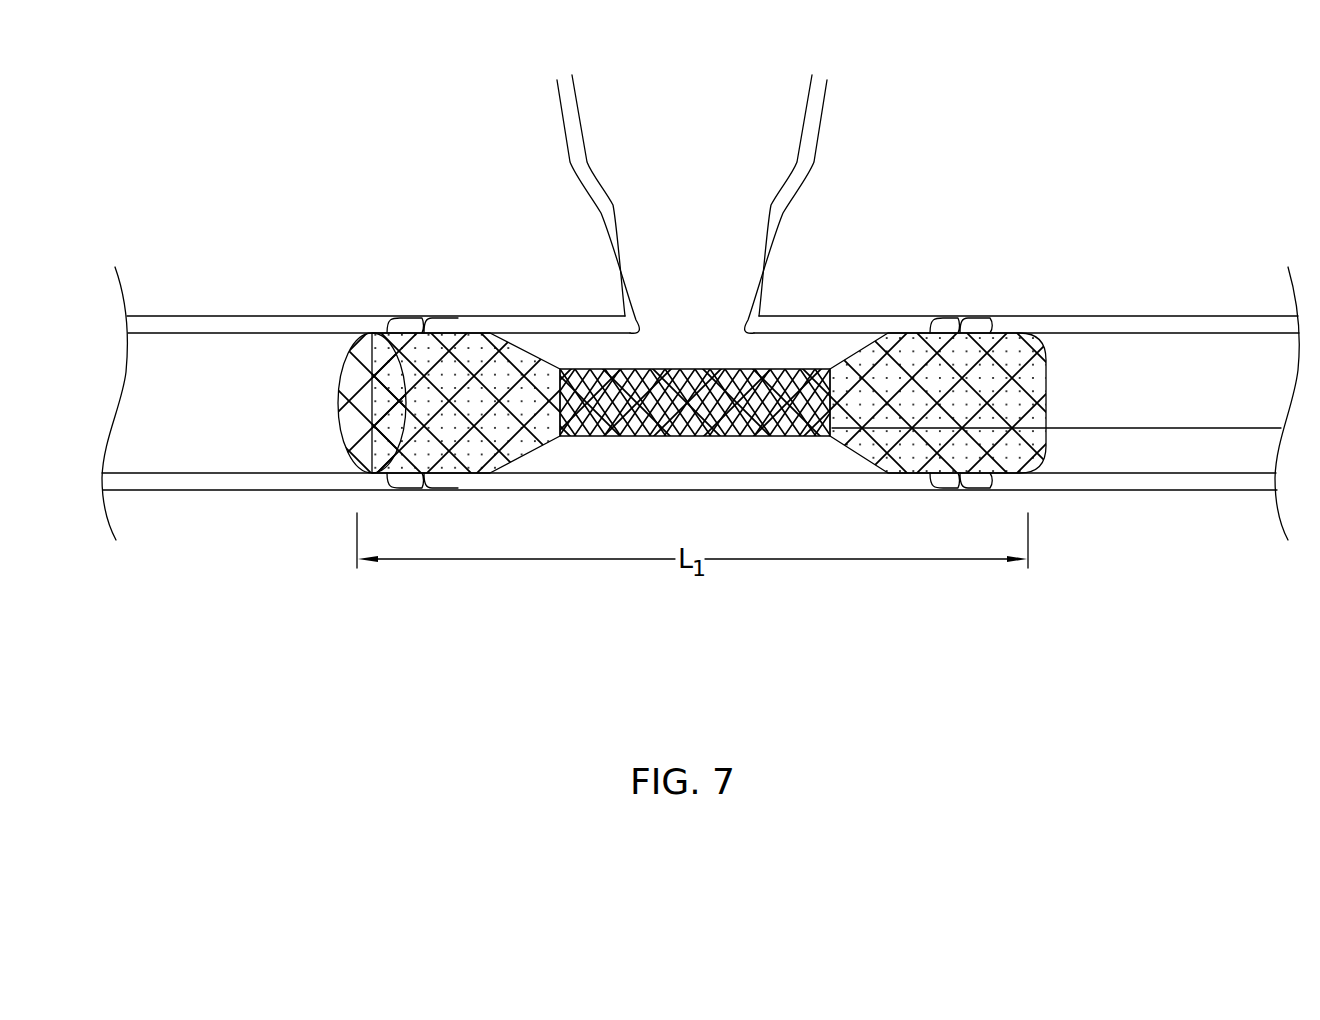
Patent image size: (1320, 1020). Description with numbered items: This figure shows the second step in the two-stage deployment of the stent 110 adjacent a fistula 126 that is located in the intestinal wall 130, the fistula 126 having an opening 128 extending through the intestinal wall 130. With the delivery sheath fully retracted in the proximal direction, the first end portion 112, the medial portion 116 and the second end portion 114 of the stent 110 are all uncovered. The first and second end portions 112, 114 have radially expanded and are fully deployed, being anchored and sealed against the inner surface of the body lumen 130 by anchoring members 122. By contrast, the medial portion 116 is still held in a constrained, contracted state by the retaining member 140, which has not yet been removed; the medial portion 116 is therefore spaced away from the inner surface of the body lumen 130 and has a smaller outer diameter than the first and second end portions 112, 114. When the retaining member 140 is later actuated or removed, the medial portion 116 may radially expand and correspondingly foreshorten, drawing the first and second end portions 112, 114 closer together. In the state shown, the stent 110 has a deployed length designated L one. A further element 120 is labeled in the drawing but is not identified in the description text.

The stent 110 is at (1082, 358).
The first end portion 112 is at (460, 333).
The second end portion 114 is at (927, 336).
The medial portion 116 is at (767, 367).
The graft covering 120 is at (487, 350).
The anchoring members 122 is at (387, 325).
The fistula 126 is at (844, 113).
The opening 128 is at (676, 290).
The intestinal wall 130 is at (1123, 480).
The retaining member 140 is at (1158, 428).